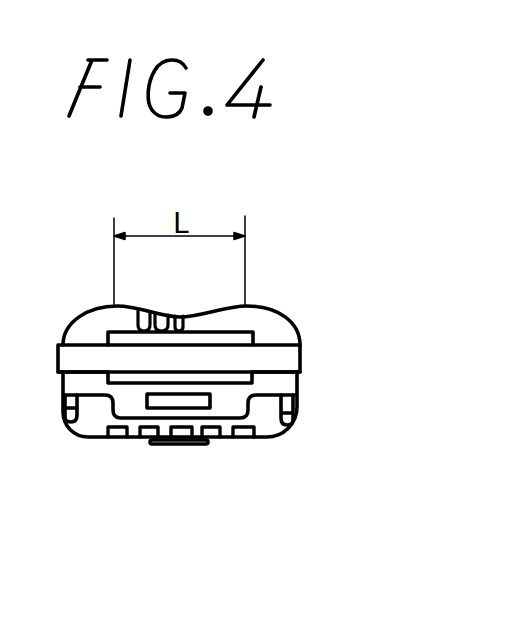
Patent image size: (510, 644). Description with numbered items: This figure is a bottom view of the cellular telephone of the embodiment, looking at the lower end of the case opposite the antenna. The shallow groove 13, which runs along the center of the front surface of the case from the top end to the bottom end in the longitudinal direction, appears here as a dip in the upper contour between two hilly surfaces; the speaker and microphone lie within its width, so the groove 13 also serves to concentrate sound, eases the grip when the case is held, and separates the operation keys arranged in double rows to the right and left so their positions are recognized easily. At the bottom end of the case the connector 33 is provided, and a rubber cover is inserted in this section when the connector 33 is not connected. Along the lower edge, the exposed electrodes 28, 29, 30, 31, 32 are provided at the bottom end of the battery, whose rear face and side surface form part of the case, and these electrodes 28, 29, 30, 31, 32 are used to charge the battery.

The shallow groove 13 is at (176, 313).
The connector 33 is at (222, 357).
The exposed electrode 28 is at (242, 432).
The exposed electrode 29 is at (210, 432).
The exposed electrode 30 is at (190, 432).
The exposed electrode 31 is at (157, 432).
The exposed electrode 32 is at (113, 432).